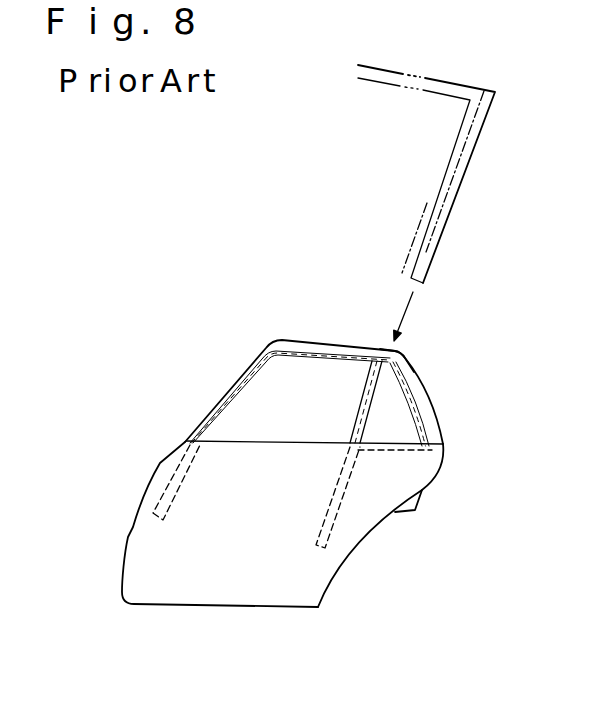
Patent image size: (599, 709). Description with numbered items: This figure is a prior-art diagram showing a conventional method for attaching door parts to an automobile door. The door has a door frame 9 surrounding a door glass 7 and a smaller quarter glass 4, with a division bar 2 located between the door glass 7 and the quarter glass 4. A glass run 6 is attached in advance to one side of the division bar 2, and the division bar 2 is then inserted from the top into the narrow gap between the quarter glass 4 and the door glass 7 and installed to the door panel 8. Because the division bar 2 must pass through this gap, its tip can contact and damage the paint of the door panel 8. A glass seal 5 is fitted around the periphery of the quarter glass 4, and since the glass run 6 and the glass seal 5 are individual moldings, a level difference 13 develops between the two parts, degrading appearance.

The division bar 2 is at (433, 262).
The quarter glass 4 is at (413, 425).
The glass seal 5 is at (413, 392).
The glass run 6 is at (253, 370).
The door glass 7 is at (298, 372).
The door panel 8 is at (280, 575).
The door frame 9 is at (233, 387).
The level difference 13 is at (397, 351).